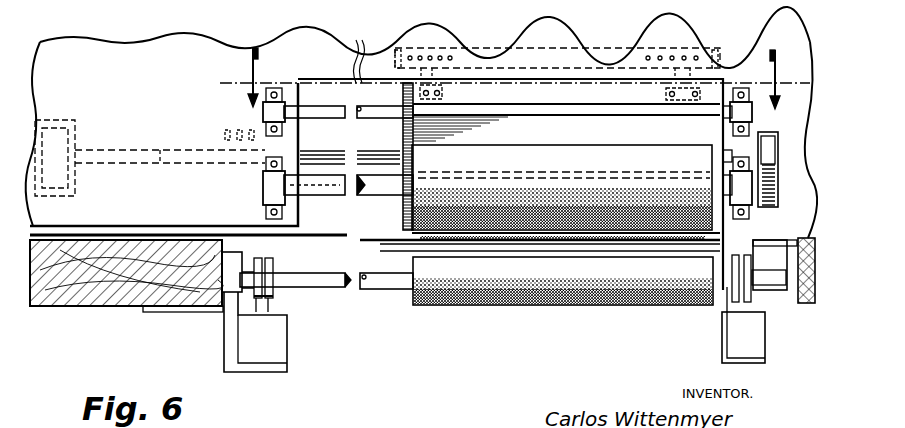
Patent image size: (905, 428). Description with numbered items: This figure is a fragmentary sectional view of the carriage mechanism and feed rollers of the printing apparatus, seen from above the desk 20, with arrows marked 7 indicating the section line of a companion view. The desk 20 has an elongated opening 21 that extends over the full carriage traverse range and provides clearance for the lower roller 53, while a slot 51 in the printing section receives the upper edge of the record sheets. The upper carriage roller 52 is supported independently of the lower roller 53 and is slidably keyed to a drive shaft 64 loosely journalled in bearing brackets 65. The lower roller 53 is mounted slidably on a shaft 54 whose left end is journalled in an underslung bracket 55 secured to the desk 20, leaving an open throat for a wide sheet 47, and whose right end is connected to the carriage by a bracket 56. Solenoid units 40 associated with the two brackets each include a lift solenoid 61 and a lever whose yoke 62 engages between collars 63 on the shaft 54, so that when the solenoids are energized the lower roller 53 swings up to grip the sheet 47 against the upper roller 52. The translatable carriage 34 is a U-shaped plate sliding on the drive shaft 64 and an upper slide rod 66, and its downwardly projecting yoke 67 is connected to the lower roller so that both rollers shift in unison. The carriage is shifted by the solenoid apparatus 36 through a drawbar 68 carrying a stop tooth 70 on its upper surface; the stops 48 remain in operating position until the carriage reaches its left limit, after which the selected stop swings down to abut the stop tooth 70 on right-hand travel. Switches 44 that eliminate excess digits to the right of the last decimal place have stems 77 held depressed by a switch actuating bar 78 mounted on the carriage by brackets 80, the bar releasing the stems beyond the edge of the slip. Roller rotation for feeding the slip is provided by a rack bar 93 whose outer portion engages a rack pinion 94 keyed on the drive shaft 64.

The section line 7- 7 is at (508, 78).
The desk 20 is at (83, 289).
The elongated opening 21 is at (368, 244).
The translatable carriage 34 is at (396, 131).
The solenoid apparatus 36 is at (80, 136).
The solenoid unit 40 is at (282, 350).
The switches 44 is at (441, 50).
The large sized sheet 47 is at (480, 247).
The stops 48 is at (222, 138).
The slot 51 is at (163, 233).
The upper carriage roller 52 is at (551, 156).
The lower roller 53 is at (585, 300).
The shaft 54 is at (376, 292).
The bracket 55 is at (230, 342).
The bracket 56 is at (772, 266).
The lift solenoid 61 is at (287, 334).
The yoke 62 is at (275, 296).
The collars 63 is at (275, 272).
The drive shaft 64 is at (327, 196).
The bearing brackets 65 is at (264, 187).
The upper slide rod 66 is at (320, 106).
The yoke 67 is at (720, 251).
The drawbar 68 is at (318, 154).
The stop tooth 70 is at (268, 149).
The switch stems 77 is at (459, 58).
The switch actuating bar 78 is at (568, 47).
The brackets 80 is at (442, 90).
The rack bar 93 is at (772, 148).
The rack pinion 94 is at (776, 180).